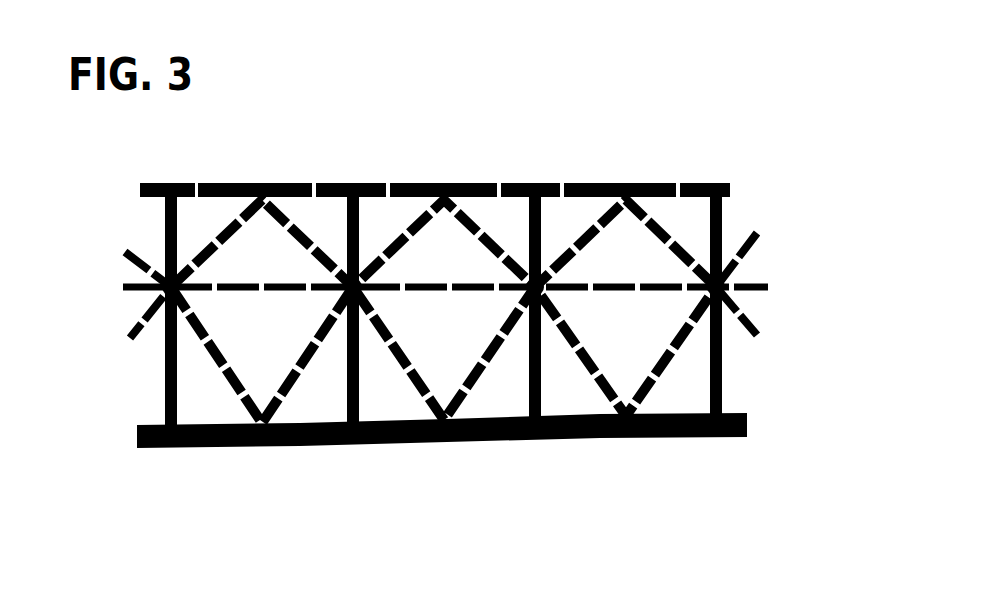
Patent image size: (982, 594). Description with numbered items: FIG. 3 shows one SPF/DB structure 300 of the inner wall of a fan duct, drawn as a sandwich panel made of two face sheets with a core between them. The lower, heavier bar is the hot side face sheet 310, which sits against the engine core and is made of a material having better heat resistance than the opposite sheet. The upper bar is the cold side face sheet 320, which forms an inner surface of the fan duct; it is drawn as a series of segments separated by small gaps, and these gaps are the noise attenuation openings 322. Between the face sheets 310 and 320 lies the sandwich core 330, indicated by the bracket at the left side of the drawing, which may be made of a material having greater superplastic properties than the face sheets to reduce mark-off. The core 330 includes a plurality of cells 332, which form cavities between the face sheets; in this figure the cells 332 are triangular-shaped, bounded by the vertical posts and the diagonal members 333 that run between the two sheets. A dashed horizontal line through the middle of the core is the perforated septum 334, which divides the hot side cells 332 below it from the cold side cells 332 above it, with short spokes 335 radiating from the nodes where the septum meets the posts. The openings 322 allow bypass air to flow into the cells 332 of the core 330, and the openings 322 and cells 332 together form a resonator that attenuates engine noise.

The SPF/DB structure 300 is at (358, 174).
The hot side face sheet 310 is at (717, 437).
The cold side face sheet 320 is at (712, 182).
The noise attenuation openings 322 is at (562, 182).
The sandwich core 330 is at (145, 203).
The cells 332 is at (281, 279).
The diagonal web member 333 is at (238, 222).
The perforated septum 334 is at (760, 277).
The node spoke 335 is at (722, 267).